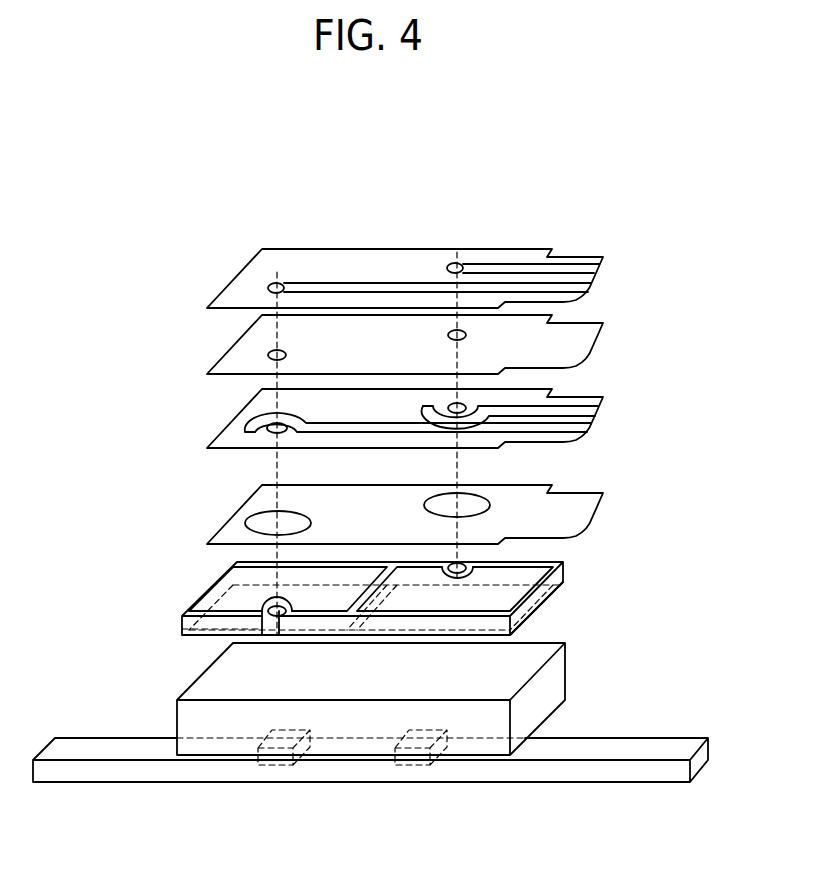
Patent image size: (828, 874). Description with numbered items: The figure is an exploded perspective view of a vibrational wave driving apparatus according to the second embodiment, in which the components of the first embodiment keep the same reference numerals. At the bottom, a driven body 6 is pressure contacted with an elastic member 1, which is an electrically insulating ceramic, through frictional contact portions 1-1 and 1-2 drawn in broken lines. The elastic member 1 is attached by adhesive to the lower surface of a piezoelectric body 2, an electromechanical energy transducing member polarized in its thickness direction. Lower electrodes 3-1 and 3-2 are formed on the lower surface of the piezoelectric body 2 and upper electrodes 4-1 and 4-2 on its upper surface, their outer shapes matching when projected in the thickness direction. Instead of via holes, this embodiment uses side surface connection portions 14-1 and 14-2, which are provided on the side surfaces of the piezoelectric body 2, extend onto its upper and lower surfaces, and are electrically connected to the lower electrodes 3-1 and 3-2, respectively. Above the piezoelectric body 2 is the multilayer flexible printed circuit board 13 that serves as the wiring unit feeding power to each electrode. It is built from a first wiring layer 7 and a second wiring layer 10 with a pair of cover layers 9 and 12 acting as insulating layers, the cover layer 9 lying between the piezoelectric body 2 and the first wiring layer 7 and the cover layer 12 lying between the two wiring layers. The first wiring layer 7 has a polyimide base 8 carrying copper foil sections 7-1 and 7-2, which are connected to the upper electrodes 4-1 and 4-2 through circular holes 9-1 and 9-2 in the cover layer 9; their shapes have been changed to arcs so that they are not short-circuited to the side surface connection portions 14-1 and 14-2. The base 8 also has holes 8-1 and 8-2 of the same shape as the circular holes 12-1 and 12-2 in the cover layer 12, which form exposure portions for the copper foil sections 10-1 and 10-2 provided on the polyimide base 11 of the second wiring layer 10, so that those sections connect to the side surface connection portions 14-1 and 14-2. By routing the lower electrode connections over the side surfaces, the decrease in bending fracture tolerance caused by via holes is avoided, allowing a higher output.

The elastic member 1 is at (552, 685).
The frictional contact portion 1-1 is at (407, 765).
The frictional contact portion 1-2 is at (270, 765).
The piezoelectric body 2 is at (181, 616).
The lower electrode 3-1 is at (546, 603).
The lower electrode 3-2 is at (215, 625).
The upper electrode 4-1 is at (528, 577).
The upper electrode 4-2 is at (237, 598).
The driven body 6 is at (145, 782).
The first wiring layer 7 is at (619, 392).
The copper foil section 7-1 is at (468, 405).
The copper foil section 7-2 is at (268, 416).
The base 8 is at (237, 438).
The hole 8-1 is at (262, 424).
The hole 8-2 is at (490, 407).
The cover layer 9 is at (237, 533).
The circular hole 9-1 is at (263, 519).
The circular hole 9-2 is at (481, 503).
The second wiring layer 10 is at (619, 250).
The copper foil section 10-1 is at (460, 263).
The copper foil section 10-2 is at (271, 283).
The base 11 is at (237, 297).
The cover layer 12 is at (237, 363).
The circular hole 12-1 is at (270, 350).
The circular hole 12-2 is at (466, 334).
The multilayer flexible printed circuit board 13 is at (692, 248).
The side surface connection portion 14-1 is at (466, 567).
The side surface connection portion 14-2 is at (268, 608).